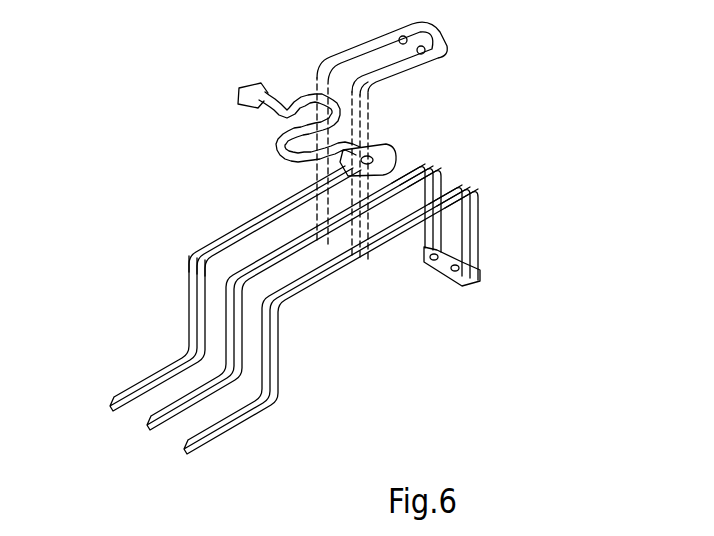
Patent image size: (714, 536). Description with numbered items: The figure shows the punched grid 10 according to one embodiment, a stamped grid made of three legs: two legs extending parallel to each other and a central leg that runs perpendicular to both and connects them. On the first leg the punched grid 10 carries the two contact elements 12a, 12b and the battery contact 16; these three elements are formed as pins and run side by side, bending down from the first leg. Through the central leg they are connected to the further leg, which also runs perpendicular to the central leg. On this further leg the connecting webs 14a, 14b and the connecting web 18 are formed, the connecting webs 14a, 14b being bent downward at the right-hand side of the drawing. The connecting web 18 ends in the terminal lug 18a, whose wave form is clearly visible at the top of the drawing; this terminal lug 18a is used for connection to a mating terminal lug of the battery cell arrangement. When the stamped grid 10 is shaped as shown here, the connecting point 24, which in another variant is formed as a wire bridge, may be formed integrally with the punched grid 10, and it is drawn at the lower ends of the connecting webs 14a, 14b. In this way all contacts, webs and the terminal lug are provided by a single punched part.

The punched grid 10 is at (150, 203).
The contact element 12a is at (186, 455).
The contact element 12b is at (147, 427).
The connecting web 14a is at (426, 166).
The connecting web 14b is at (466, 182).
The battery contact 16 is at (108, 401).
The connecting web 18 is at (283, 203).
The terminal lug 18a is at (290, 110).
The connecting point 24 is at (481, 229).